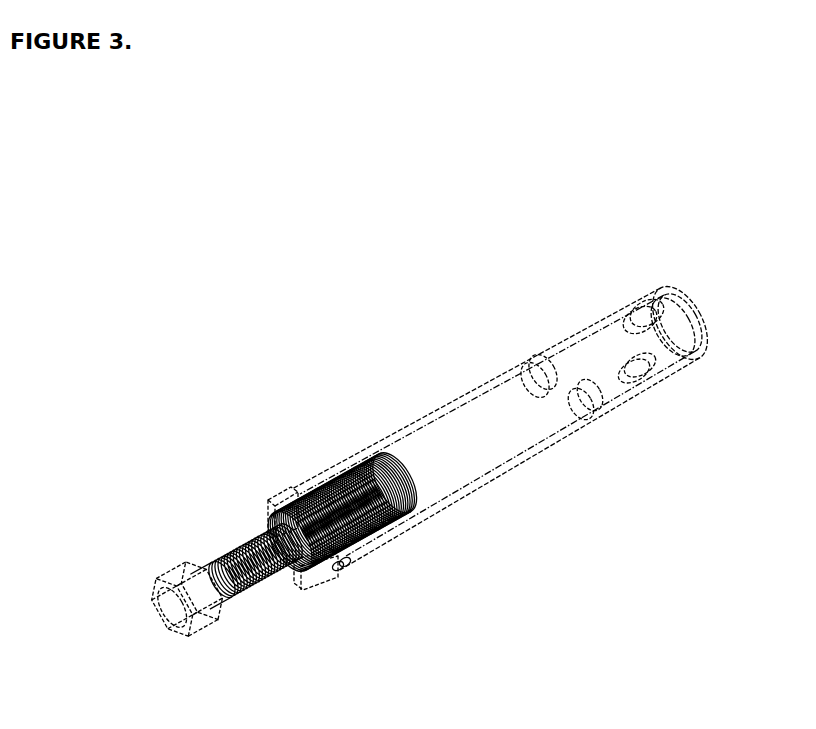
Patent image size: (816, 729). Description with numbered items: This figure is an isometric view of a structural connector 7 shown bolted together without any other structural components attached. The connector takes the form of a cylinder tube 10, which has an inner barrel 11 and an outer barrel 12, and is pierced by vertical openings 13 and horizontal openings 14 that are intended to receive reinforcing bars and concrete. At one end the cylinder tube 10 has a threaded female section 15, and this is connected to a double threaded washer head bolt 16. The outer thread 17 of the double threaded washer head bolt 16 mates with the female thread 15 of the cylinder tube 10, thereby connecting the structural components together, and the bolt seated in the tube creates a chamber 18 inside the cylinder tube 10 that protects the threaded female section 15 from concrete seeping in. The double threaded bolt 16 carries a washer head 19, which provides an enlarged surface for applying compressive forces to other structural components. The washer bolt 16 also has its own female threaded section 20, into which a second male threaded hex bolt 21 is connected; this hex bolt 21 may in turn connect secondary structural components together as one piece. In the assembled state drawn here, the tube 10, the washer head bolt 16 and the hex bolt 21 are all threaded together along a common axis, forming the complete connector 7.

The structural connector 7 is at (152, 303).
The cylinder tube 10 is at (518, 473).
The inner barrel 11 is at (678, 348).
The outer barrel 12 is at (678, 290).
The vertical openings 13 is at (627, 318).
The horizontal openings 14 is at (610, 404).
The threaded female section 15 is at (342, 566).
The double threaded washer head bolt 16 is at (348, 565).
The outer thread 17 is at (347, 470).
The chamber 18 is at (397, 527).
The washer head 19 is at (318, 588).
The female threaded section 20 is at (277, 497).
The second male threaded hex bolt 21 is at (230, 556).